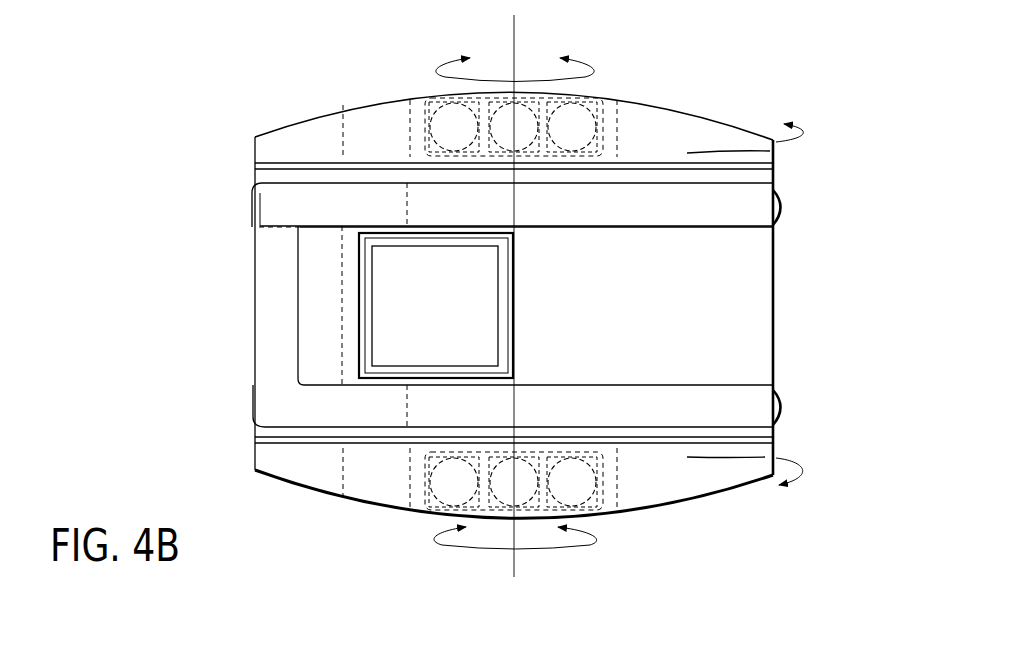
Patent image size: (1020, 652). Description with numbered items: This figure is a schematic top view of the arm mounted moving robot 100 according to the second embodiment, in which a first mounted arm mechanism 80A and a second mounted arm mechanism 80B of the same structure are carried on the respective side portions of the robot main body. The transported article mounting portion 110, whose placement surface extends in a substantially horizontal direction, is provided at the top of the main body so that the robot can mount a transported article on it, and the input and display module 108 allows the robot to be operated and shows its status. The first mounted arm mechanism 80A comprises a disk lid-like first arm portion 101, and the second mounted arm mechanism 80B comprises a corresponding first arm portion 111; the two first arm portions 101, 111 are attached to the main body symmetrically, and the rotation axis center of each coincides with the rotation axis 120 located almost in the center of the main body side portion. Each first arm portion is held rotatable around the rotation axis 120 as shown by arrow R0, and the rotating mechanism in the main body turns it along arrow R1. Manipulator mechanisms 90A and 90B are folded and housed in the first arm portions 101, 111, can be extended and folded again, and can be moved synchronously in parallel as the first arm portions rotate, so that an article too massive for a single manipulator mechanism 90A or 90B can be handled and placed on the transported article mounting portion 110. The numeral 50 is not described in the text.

The arm mounted moving robot 100 is at (546, 306).
The housing 50 is at (763, 283).
The transported article mounting portion 110 is at (264, 407).
The input and display module 108 is at (477, 349).
The first mounted arm mechanism 80A is at (745, 511).
The second mounted arm mechanism 80B is at (719, 100).
The manipulator mechanism 90A is at (423, 526).
The manipulator mechanism 90B is at (605, 84).
The first arm portion 101 is at (353, 497).
The first arm portion 111 is at (672, 118).
The rotation axis 120 is at (512, 38).
The arrow R0 is at (591, 539).
The arrow R1 is at (801, 471).